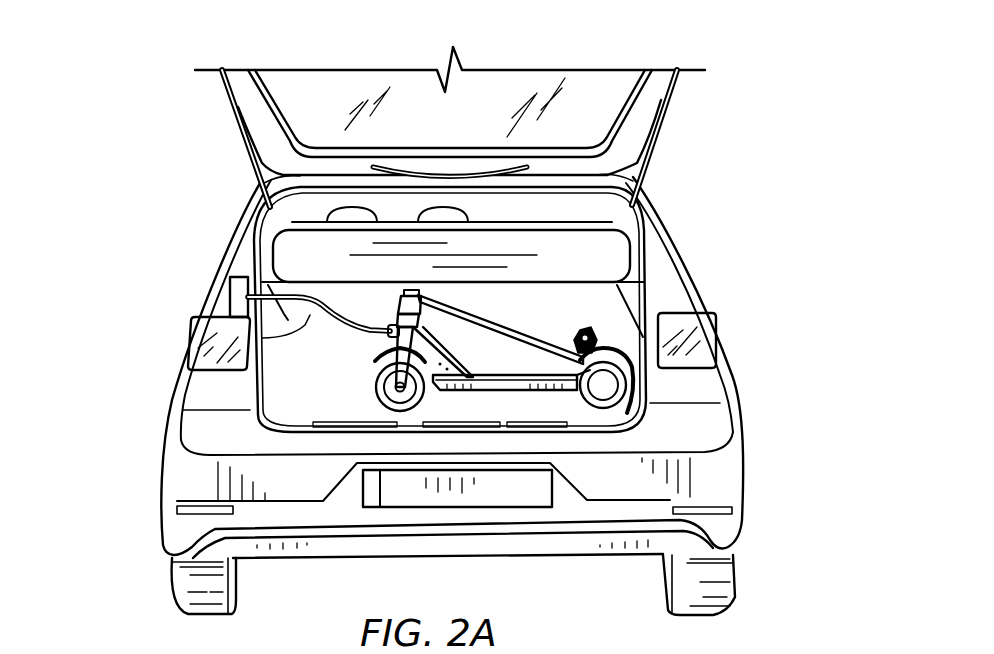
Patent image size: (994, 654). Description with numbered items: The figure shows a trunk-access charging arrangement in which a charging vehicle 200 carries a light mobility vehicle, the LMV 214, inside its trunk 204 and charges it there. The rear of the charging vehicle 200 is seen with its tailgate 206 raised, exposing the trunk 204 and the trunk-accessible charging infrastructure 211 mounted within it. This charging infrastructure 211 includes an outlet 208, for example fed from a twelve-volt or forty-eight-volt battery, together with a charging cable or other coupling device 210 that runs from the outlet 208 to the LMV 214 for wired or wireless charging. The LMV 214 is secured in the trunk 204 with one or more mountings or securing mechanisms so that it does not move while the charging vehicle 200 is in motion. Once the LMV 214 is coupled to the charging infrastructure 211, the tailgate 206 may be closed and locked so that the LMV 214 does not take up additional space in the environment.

The charging vehicle 200 is at (757, 78).
The trunk 204 is at (752, 370).
The tailgate 206 is at (667, 97).
The outlet 208 is at (243, 277).
The charging cable 210 is at (312, 306).
The trunk-accessible charging infrastructure 211 is at (90, 232).
The LMV 214 is at (617, 405).